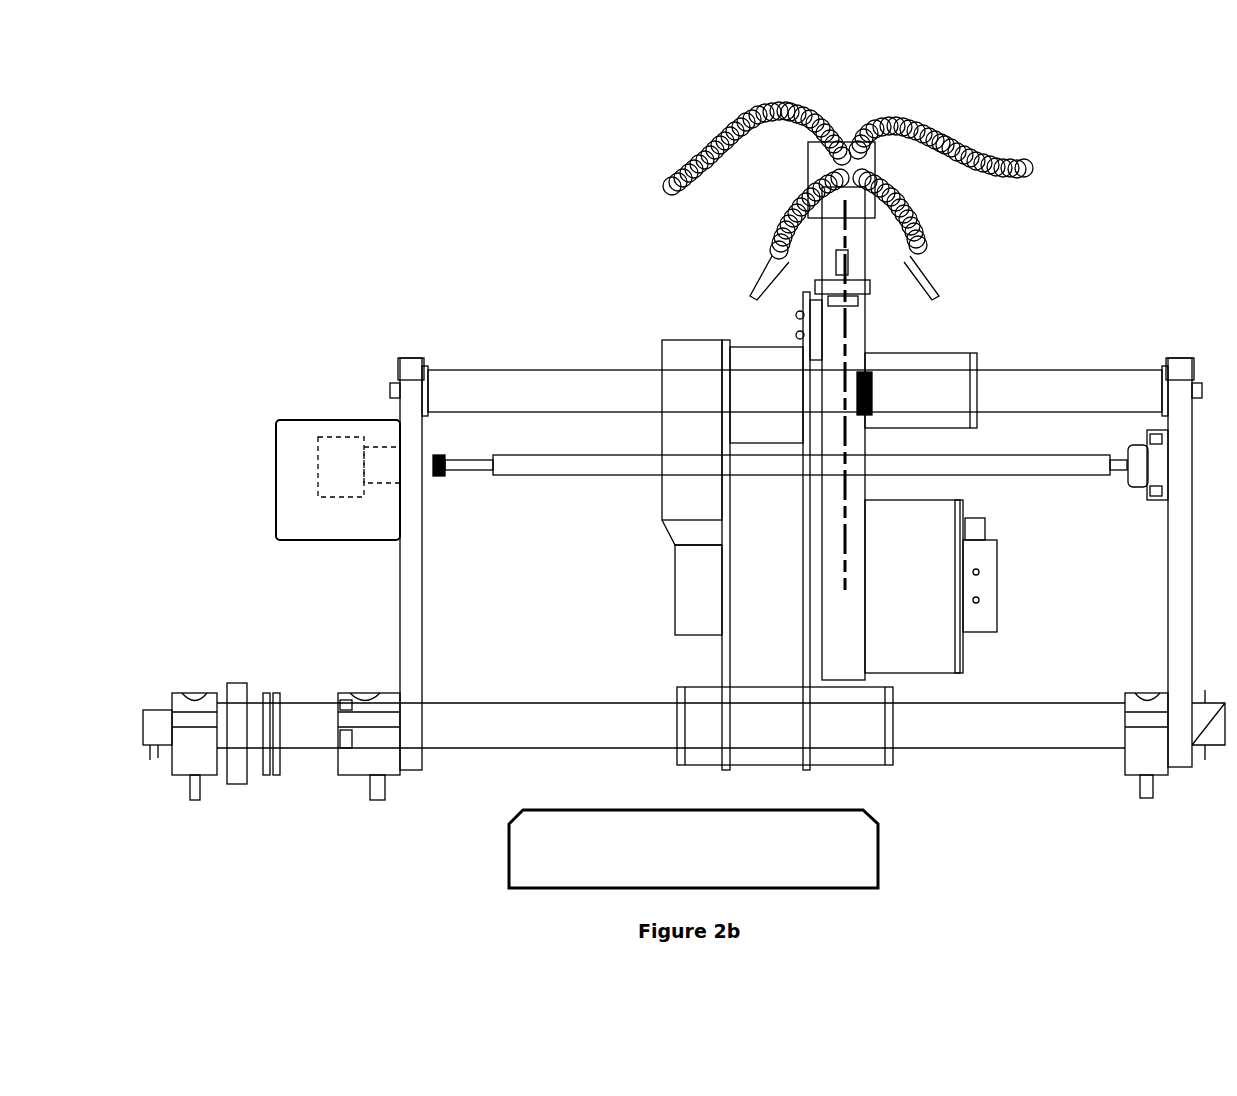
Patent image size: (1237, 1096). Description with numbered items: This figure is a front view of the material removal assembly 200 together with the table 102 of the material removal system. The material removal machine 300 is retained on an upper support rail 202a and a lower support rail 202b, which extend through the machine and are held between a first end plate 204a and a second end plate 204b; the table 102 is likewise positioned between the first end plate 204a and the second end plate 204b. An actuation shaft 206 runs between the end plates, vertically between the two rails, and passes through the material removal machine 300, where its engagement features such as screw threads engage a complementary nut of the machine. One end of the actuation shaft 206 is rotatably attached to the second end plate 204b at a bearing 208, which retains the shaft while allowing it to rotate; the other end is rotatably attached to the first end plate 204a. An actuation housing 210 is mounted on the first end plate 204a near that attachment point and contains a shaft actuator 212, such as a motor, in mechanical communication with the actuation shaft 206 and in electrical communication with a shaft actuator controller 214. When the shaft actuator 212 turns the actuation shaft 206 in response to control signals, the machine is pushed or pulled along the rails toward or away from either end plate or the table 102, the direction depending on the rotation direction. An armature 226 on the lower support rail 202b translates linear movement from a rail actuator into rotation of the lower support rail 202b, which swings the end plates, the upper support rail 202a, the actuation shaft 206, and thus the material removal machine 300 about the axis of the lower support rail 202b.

The material removal assembly 200 is at (183, 280).
The material removal machine 300 is at (845, 105).
The first end plate 204a is at (408, 358).
The second end plate 204b is at (1180, 358).
The upper support rail 202a is at (605, 370).
The lower support rail 202b is at (553, 718).
The actuation shaft 206 is at (580, 455).
The bearing 208 is at (1130, 445).
The actuation housing 210 is at (275, 435).
The shaft actuator controller 214 is at (320, 450).
The shaft actuator 212 is at (385, 460).
The armature 226 is at (240, 693).
The table 102 is at (693, 849).